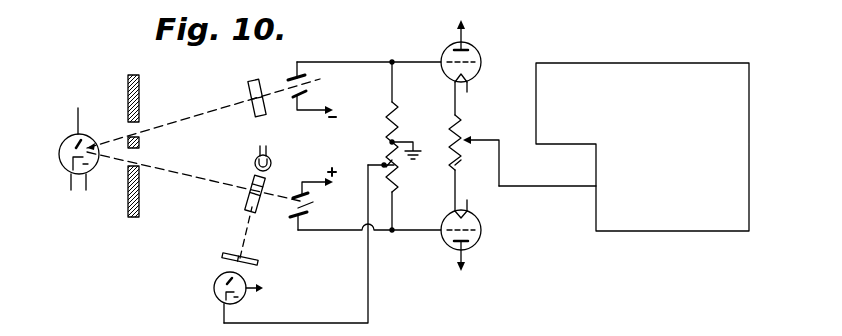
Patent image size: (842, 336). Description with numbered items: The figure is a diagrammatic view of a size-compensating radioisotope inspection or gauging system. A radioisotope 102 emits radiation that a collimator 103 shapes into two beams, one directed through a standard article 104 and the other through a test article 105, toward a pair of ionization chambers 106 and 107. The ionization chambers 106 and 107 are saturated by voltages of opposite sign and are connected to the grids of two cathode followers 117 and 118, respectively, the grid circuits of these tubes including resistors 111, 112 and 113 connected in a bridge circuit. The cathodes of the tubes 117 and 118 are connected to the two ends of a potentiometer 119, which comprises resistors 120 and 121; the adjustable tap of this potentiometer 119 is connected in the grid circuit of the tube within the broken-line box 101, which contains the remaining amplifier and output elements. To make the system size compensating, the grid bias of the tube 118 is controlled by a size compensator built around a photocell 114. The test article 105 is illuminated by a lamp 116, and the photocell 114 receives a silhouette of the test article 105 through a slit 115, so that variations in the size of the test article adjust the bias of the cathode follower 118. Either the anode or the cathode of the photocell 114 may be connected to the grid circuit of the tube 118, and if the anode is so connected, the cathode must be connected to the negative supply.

The broken-line box 101 is at (603, 63).
The radioisotope 102 is at (101, 134).
The collimator 103 is at (140, 148).
The standard article 104 is at (247, 90).
The test article 105 is at (245, 199).
The ionization chamber 106 is at (308, 94).
The ionization chamber 107 is at (304, 196).
The resistor 111 is at (398, 122).
The resistor 112 is at (385, 151).
The resistor 113 is at (399, 173).
The photocell 114 is at (214, 295).
The slit 115 is at (226, 262).
The lamp 116 is at (273, 158).
The cathode follower 117 is at (481, 58).
The cathode follower 118 is at (480, 236).
The potentiometer 119 is at (482, 153).
The resistor 120 is at (460, 118).
The resistor 121 is at (460, 168).